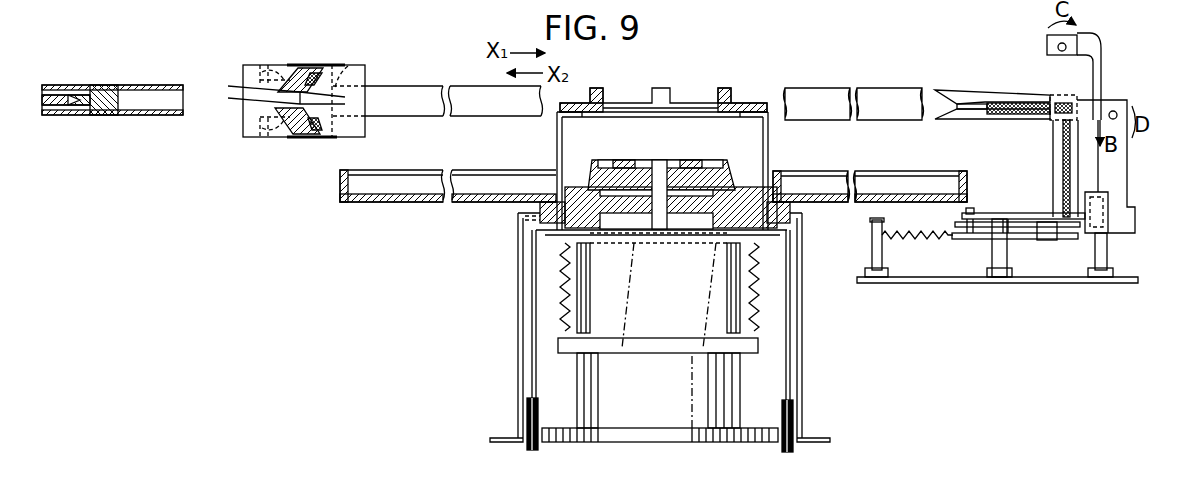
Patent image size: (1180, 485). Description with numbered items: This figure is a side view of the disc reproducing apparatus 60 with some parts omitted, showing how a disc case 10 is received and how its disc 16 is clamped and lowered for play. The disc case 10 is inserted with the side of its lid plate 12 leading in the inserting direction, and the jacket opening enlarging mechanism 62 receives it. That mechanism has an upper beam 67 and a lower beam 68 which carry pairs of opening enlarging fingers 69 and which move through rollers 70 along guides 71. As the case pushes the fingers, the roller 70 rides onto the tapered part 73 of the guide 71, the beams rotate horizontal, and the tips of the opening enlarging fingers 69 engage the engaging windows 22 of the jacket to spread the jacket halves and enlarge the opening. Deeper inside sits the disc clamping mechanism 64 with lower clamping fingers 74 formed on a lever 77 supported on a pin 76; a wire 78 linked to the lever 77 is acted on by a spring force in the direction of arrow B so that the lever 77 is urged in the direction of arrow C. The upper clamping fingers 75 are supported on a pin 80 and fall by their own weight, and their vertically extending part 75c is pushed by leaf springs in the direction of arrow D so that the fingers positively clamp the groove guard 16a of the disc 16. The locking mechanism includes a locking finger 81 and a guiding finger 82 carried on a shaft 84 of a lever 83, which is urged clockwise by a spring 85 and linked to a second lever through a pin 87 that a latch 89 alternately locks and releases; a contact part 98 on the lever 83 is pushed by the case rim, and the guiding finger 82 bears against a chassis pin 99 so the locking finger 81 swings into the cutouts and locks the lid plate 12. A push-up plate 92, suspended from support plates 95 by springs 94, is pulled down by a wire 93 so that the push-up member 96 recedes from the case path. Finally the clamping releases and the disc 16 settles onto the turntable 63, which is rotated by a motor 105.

The disc case 10 is at (97, 83).
The lid plate 12 is at (183, 101).
The disc 16 is at (59, 94).
The groove guard 16a is at (73, 108).
The engaging windows 22 is at (133, 85).
The disc reproducing apparatus 60 is at (846, 64).
The jacket opening enlarging mechanism 62 is at (318, 62).
The turntable 63 is at (448, 206).
The disc clamping mechanism 64 is at (978, 87).
The upper beam 67 is at (300, 68).
The lower beam 68 is at (305, 137).
The opening enlarging fingers 69 is at (246, 93).
The rollers 70 is at (280, 65).
The guides 71 is at (450, 80).
The tapered part 73 is at (350, 66).
The lower clamping fingers 74 is at (950, 119).
The upper clamping fingers 75 is at (958, 94).
The vertically extending part 75c is at (1128, 172).
The pin 76 is at (1057, 46).
The lever 77 is at (1102, 68).
The wire 78 is at (1090, 40).
The pin 80 is at (1118, 110).
The locking finger 81 is at (969, 110).
The guiding finger 82 is at (1044, 240).
The lever 83 is at (970, 240).
The shaft 84 is at (1055, 158).
The spring 85 is at (909, 247).
The pin 87 is at (972, 208).
The latch 89 is at (1033, 213).
The push-up plate 92 is at (667, 353).
The wire 93 is at (532, 325).
The springs 94 is at (568, 330).
The support plates 95 is at (518, 283).
The push-up member 96 is at (724, 88).
The contact part 98 is at (1012, 114).
The pin 99 is at (995, 255).
The motor 105 is at (670, 430).